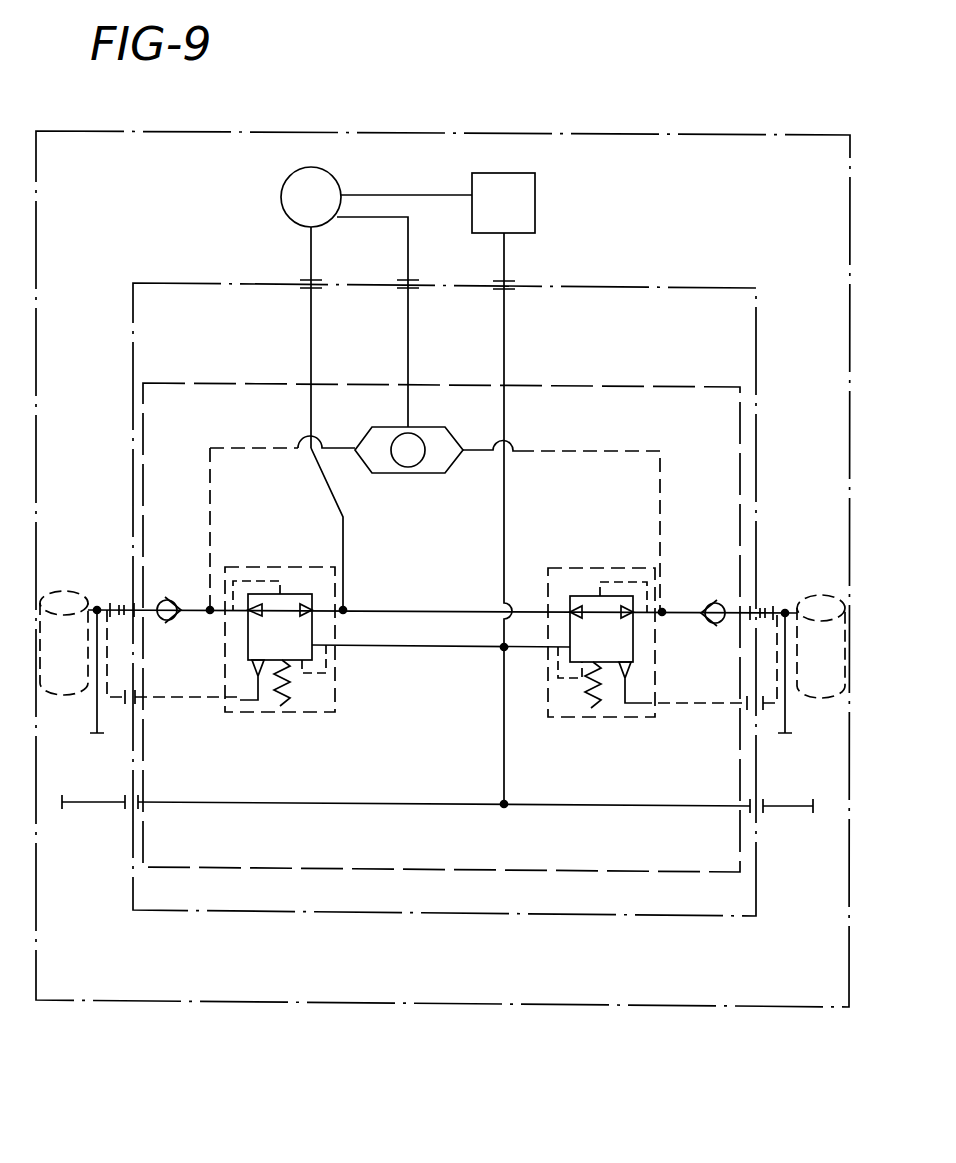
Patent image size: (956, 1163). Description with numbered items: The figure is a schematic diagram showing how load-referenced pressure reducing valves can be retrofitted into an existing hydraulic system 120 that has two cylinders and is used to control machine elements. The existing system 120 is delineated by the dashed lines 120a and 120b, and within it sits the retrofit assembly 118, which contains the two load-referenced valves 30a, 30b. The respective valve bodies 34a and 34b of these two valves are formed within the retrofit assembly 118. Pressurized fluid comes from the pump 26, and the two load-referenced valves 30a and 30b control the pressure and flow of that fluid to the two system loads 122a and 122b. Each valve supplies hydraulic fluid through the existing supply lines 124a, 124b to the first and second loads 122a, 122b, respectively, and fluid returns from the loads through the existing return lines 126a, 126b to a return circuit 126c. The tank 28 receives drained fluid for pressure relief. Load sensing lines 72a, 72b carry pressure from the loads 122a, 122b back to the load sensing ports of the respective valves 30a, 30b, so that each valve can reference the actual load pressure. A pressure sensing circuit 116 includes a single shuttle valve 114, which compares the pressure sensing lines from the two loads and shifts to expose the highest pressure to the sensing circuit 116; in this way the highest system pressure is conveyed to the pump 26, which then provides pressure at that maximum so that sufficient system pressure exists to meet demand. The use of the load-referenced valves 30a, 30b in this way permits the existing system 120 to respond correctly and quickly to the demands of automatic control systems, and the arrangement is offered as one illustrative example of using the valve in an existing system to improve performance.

The existing hydraulic system 120 is at (257, 167).
The dashed line 120a is at (390, 131).
The dashed line 120b is at (168, 283).
The pump 26 is at (288, 218).
The tank 28 is at (537, 194).
The return circuit 126c is at (504, 252).
The retrofit assembly 118 is at (273, 384).
The pressure sensing circuit 116 is at (408, 357).
The shuttle valve 114 is at (415, 476).
The first load 122a is at (52, 590).
The second load 122b is at (832, 595).
The existing supply line 124a is at (111, 606).
The existing supply line 124b is at (780, 606).
The existing return line 126a is at (100, 801).
The existing return line 126b is at (785, 806).
The load sensing line 72a is at (195, 698).
The load sensing line 72b is at (685, 704).
The load-referenced valve 30a is at (321, 546).
The load-referenced valve 30b is at (597, 582).
The valve body 34a is at (340, 712).
The valve body 34b is at (578, 718).